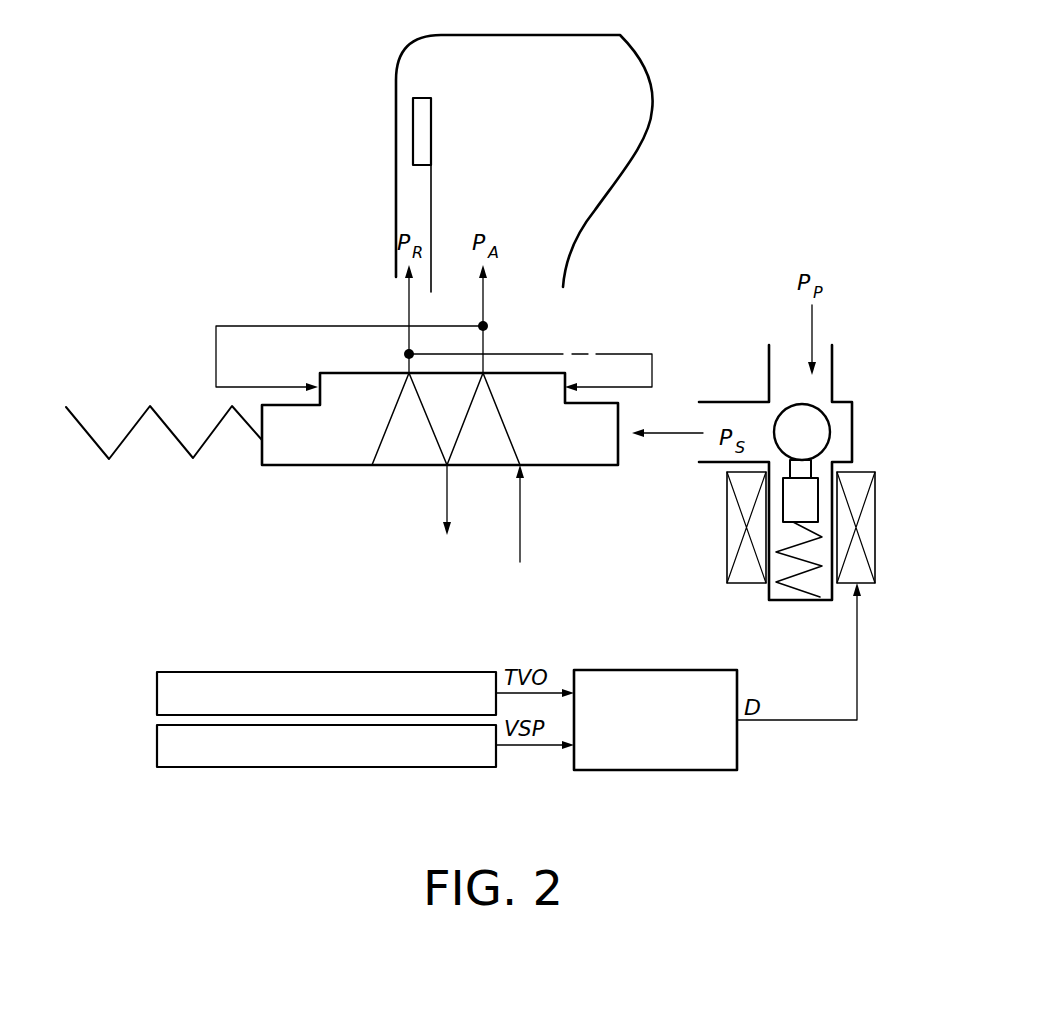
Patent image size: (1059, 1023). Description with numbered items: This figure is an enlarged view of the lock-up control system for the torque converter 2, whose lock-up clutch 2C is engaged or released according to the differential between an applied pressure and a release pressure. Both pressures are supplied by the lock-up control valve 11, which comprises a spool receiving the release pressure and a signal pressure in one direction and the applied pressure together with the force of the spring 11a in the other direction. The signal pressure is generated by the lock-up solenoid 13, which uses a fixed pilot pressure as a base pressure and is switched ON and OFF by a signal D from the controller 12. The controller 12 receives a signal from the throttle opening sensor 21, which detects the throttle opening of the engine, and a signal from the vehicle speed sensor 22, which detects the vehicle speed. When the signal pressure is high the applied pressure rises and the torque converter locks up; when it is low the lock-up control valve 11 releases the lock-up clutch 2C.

The torque converter 2 is at (662, 83).
The lock-up clutch 2C is at (426, 148).
The lock-up control valve 11 is at (285, 478).
The spring 11a is at (178, 448).
The controller 12 is at (645, 670).
The lock-up solenoid 13 is at (852, 438).
The throttle opening sensor 21 is at (157, 690).
The vehicle speed sensor 22 is at (157, 745).